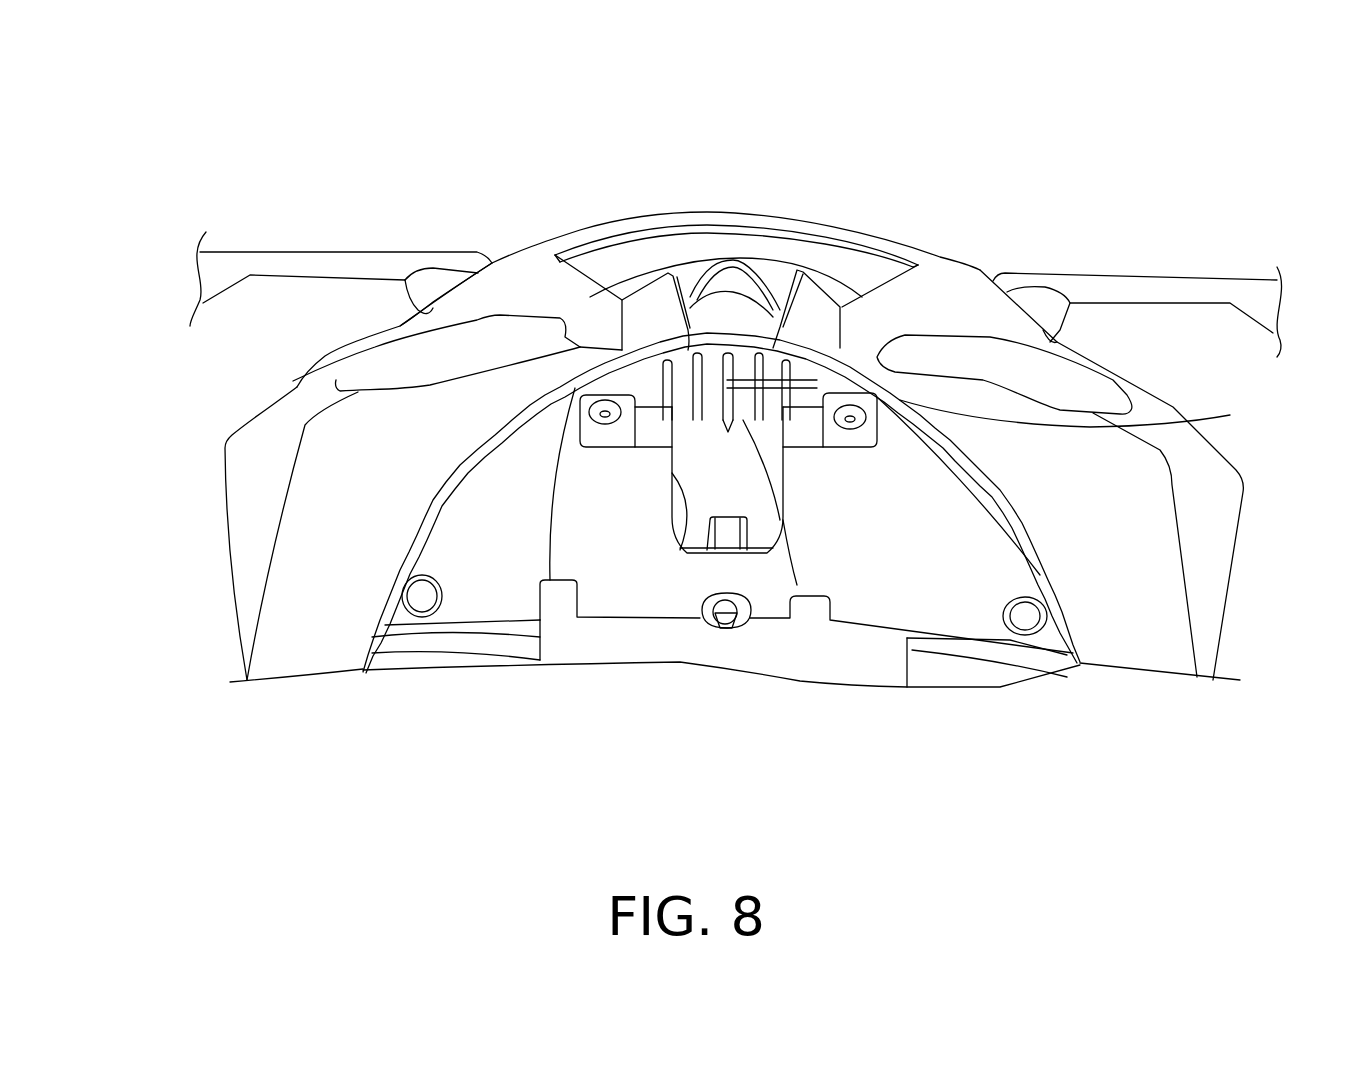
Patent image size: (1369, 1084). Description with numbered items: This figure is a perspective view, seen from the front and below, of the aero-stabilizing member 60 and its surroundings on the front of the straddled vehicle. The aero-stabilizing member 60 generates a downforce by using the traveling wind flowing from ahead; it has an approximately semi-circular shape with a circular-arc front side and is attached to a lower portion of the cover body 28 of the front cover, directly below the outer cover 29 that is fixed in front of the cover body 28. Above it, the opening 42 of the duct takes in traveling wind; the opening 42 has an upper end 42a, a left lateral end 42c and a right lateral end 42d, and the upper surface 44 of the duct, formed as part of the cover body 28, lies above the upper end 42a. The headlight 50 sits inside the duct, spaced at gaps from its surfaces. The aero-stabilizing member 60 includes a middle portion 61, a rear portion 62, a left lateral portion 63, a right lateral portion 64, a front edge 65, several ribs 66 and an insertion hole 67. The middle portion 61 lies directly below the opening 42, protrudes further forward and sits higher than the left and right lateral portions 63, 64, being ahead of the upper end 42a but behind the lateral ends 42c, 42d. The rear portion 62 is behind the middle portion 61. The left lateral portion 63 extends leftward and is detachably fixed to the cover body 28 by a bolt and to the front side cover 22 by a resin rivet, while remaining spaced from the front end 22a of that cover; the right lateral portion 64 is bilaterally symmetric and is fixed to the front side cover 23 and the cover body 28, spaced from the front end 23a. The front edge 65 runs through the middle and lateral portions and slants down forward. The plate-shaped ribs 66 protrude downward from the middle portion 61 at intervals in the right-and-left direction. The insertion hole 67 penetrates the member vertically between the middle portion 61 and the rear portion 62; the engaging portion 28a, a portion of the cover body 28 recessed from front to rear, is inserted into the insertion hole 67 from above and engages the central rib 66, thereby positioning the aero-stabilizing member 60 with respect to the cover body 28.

The front side cover 22 is at (1173, 652).
The front end 22a is at (933, 383).
The front side cover 23 is at (267, 653).
The front end 23a is at (487, 400).
The cover body 28 is at (222, 500).
The engaging portion 28a is at (800, 598).
The outer cover 29 is at (521, 263).
The opening 42 is at (817, 232).
The upper end 42a is at (618, 266).
The left lateral end 42c is at (887, 273).
The right lateral end 42d is at (597, 273).
The upper surface 44 is at (663, 255).
The headlight 50 is at (750, 290).
The aero-stabilizing member 60 is at (430, 548).
The middle portion 61 is at (713, 345).
The rear portion 62 is at (726, 580).
The left lateral portion 63 is at (890, 563).
The right lateral portion 64 is at (493, 563).
The front edge 65 is at (554, 620).
The rib 66 is at (1088, 417).
The insertion hole 67 is at (676, 550).